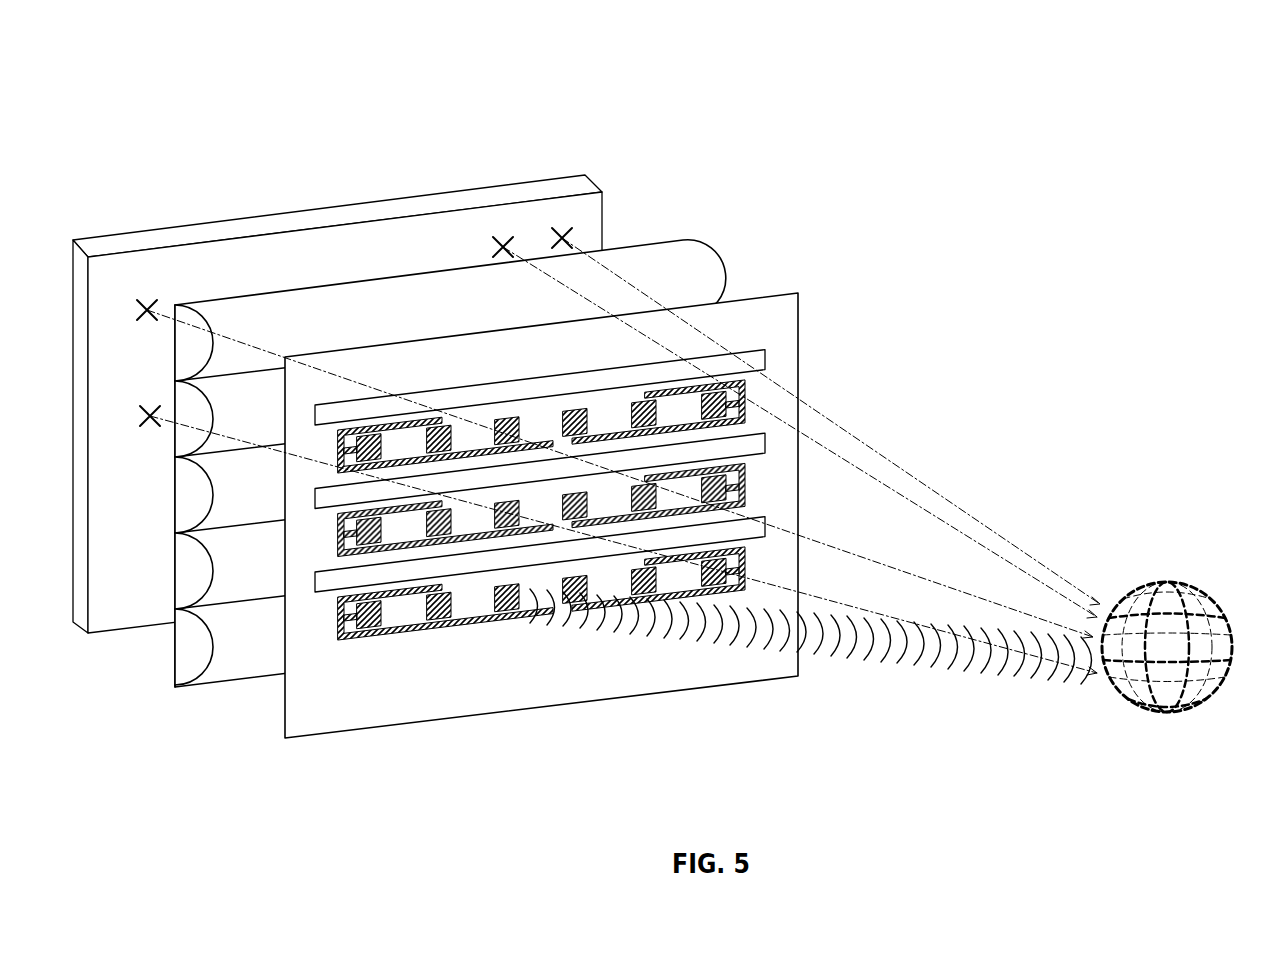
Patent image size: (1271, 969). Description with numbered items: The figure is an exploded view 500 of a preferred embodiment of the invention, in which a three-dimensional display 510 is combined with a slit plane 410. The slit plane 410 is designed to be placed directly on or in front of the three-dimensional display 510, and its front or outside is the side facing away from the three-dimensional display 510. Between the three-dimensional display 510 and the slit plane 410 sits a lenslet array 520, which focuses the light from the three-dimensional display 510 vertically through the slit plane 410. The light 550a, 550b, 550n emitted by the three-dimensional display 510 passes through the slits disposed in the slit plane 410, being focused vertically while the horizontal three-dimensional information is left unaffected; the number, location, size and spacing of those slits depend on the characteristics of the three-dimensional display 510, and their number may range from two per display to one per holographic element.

The exploded view 500 is at (165, 140).
The 3-D display 510 is at (603, 220).
The lenslet array 520 is at (728, 275).
The slit plane 410 is at (800, 340).
The light 550a is at (865, 448).
The light 550b is at (918, 512).
The light 550n is at (860, 610).